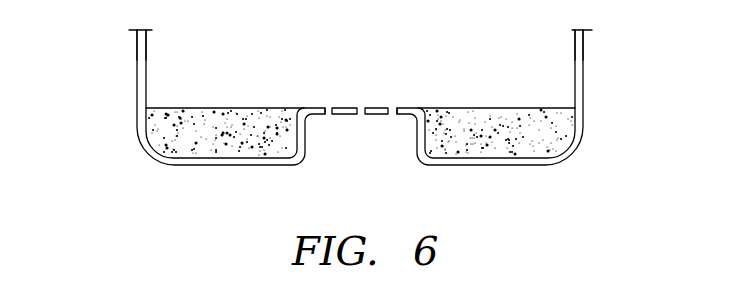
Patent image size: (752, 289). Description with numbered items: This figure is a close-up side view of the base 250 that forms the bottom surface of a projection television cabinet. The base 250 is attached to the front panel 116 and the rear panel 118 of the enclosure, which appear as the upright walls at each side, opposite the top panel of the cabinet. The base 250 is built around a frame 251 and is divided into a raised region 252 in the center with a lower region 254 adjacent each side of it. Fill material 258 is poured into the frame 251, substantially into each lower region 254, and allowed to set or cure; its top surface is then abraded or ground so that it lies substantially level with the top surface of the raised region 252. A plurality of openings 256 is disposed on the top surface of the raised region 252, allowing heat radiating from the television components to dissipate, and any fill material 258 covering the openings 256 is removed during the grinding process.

The front panel 116 is at (137, 72).
The rear panel 118 is at (583, 72).
The base 250 is at (360, 136).
The frame 251 is at (148, 154).
The raised region 252 is at (340, 150).
The lower region 254 is at (186, 179).
The openings 256 is at (330, 116).
The fill material 258 is at (238, 135).